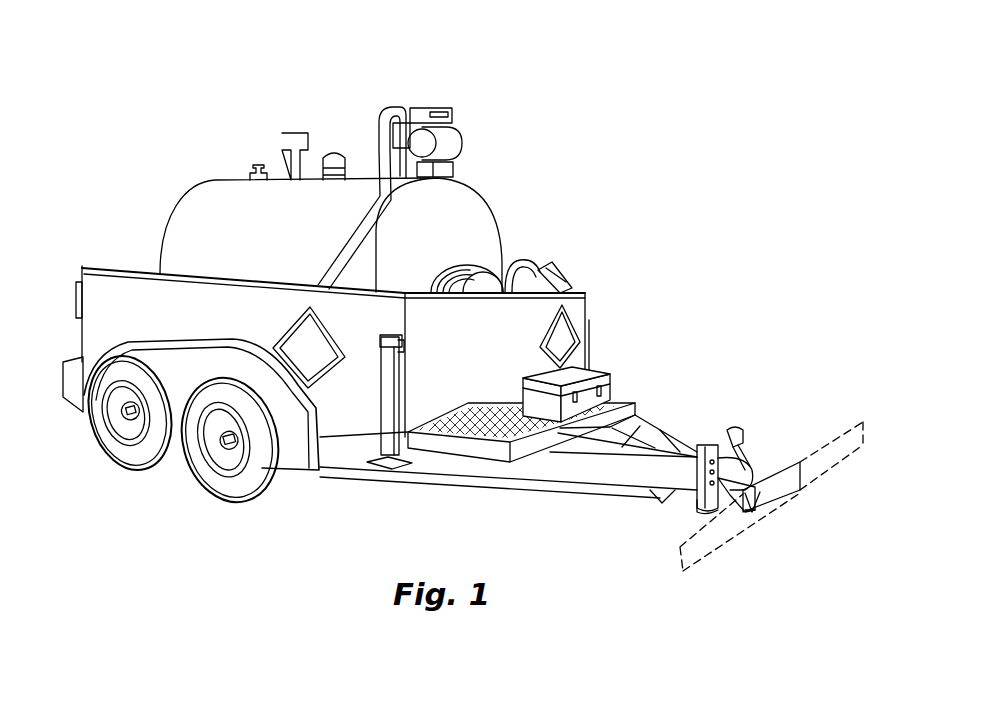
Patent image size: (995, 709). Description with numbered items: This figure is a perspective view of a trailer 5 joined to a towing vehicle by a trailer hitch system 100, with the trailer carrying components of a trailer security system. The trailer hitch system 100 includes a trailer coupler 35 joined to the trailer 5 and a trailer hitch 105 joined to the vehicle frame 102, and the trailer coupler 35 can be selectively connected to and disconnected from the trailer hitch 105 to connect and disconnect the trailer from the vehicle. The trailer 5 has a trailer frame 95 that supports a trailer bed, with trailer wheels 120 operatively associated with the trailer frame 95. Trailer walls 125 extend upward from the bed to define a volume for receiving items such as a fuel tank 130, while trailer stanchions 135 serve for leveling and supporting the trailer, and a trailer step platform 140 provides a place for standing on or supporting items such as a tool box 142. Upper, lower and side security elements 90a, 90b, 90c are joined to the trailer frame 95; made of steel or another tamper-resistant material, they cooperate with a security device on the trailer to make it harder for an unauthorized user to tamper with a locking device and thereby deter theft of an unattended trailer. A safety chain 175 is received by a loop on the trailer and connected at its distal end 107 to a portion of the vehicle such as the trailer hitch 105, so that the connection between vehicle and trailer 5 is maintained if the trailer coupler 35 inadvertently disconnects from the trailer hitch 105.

The trailer 5 is at (412, 313).
The trailer coupler 35 is at (750, 463).
The upper security element 90a is at (670, 452).
The lower security element 90b is at (687, 500).
The side security element 90c is at (717, 513).
The trailer frame 95 is at (568, 471).
The trailer hitch system 100 is at (747, 472).
The vehicle frame 102 is at (698, 562).
The trailer hitch 105 is at (783, 487).
The distal end of safety chain 107 is at (745, 510).
The trailer wheels 120 is at (243, 490).
The trailer walls 125 is at (588, 298).
The fuel tank 130 is at (233, 223).
The trailer stanchions 135 is at (388, 428).
The trailer step platform 140 is at (469, 428).
The tool box 142 is at (596, 357).
The safety chain 175 is at (733, 512).